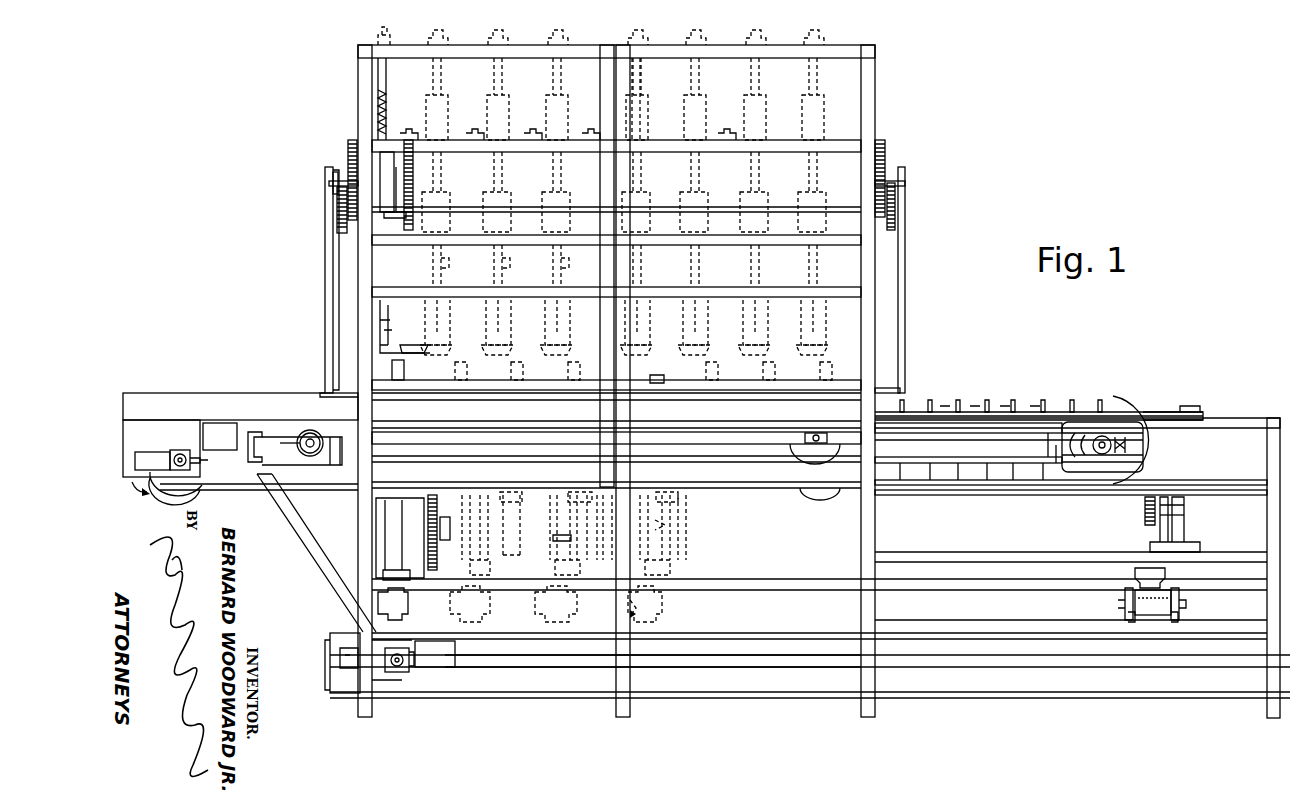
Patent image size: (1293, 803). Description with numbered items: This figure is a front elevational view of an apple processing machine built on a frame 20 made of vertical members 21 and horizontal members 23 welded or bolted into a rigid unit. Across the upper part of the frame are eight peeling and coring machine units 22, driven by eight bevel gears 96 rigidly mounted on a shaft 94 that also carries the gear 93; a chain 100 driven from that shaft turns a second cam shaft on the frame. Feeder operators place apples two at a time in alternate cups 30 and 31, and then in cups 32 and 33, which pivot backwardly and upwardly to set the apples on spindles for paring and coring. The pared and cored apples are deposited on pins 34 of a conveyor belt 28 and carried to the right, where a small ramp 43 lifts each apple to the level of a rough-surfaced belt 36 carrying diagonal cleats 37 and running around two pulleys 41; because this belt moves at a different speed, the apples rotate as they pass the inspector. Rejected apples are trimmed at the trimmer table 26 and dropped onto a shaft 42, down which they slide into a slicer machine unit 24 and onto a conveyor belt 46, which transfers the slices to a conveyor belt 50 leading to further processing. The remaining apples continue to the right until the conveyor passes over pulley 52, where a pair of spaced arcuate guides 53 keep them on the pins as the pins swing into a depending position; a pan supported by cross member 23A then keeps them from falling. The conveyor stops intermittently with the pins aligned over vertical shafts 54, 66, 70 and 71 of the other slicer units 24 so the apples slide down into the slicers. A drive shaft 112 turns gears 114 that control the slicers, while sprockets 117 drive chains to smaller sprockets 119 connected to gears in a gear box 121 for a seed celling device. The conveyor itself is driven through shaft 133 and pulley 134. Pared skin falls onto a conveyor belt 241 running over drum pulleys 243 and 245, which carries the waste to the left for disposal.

The frame 20 is at (881, 50).
The vertical members 21 is at (358, 90).
The peeling and coring machine units 22 is at (396, 88).
The horizontal members 23 is at (870, 148).
The cross member 23A is at (950, 490).
The slicer machine units 24 is at (704, 541).
The trimmer table 26 is at (1178, 410).
The conveyor belt 28 is at (312, 428).
The cup 30 is at (415, 345).
The cup 31 is at (654, 370).
The cup 32 is at (597, 370).
The cup 33 is at (711, 370).
The pins 34 is at (1015, 410).
The belt 36 is at (940, 410).
The cleats 37 is at (960, 400).
The pulleys 41 is at (915, 410).
The shaft 42 is at (1165, 517).
The ramp 43 is at (880, 417).
The conveyor belt 46 is at (1160, 600).
The conveyor belt 50 is at (750, 633).
The pulley 52 is at (1092, 433).
The arcuate guides 53 is at (1113, 396).
The shaft 54 is at (660, 507).
The shaft 66 is at (570, 507).
The shaft 70 is at (487, 507).
The shaft 71 is at (400, 511).
The gear 93 is at (356, 140).
The shaft 94 is at (345, 165).
The bevel gears 96 is at (408, 137).
The chain 100 is at (328, 262).
The drive shaft 112 is at (548, 578).
The gears 114 is at (685, 560).
The sprockets 117 is at (666, 600).
The sprockets 119 is at (636, 626).
The gear box 121 is at (372, 597).
The shaft 133 is at (312, 453).
The pulley 134 is at (303, 440).
The conveyor belt 241 is at (262, 492).
The drum pulley 243 is at (200, 470).
The drum pulley 245 is at (820, 492).